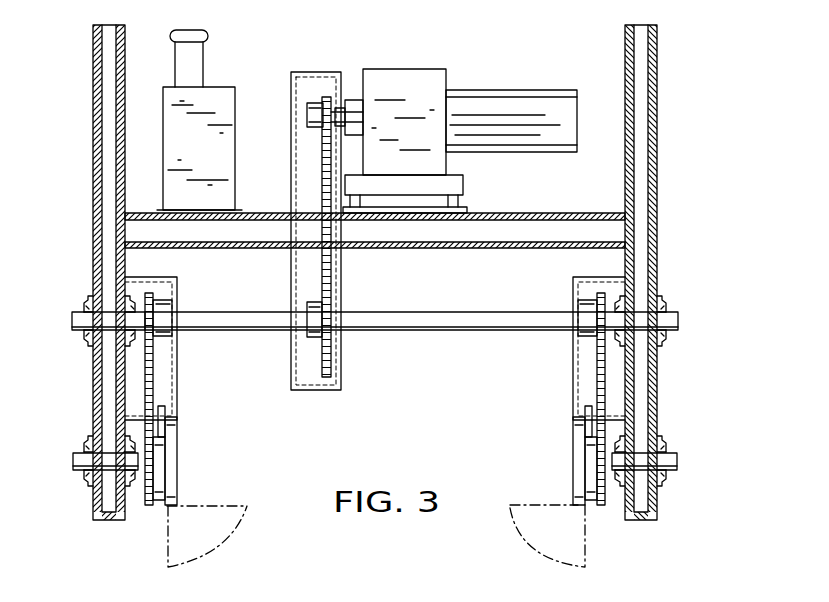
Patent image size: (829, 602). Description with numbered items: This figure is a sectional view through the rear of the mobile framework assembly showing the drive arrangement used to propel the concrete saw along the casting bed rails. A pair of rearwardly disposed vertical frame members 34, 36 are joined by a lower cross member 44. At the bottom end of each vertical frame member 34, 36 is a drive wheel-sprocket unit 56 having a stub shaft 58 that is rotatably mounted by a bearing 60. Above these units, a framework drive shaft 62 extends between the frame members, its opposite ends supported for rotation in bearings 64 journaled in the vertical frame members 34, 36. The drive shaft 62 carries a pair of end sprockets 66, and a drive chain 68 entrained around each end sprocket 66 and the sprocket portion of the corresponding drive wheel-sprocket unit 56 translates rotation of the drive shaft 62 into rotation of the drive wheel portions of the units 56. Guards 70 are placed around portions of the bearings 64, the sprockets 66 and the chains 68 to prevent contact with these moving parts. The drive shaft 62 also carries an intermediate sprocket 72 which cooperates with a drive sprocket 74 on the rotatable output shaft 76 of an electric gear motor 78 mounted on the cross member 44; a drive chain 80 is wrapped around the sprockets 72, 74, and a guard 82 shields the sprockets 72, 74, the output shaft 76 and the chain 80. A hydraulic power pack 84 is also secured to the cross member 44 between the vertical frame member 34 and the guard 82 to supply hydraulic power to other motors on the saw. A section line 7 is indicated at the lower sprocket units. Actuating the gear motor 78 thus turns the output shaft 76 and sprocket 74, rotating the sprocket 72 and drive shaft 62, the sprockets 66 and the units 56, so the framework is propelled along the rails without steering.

The section line 7- 7 is at (376, 534).
The vertical frame member 34 is at (95, 168).
The vertical frame member 36 is at (657, 160).
The lower cross member 44 is at (550, 213).
The drive wheel-sprocket unit 56 is at (172, 480).
The stub shaft 58 is at (83, 461).
The bearing 60 is at (90, 483).
The framework drive shaft 62 is at (430, 318).
The bearing 64 is at (87, 306).
The end sprocket 66 is at (167, 330).
The drive chain 68 is at (610, 398).
The guard 70 is at (176, 295).
The intermediate sprocket 72 is at (313, 325).
The drive sprocket 74 is at (313, 112).
The output shaft 76 is at (338, 118).
The electric gear motor 78 is at (450, 103).
The drive chain 80 is at (332, 280).
The guard 82 is at (310, 391).
The hydraulic power pack 84 is at (222, 95).